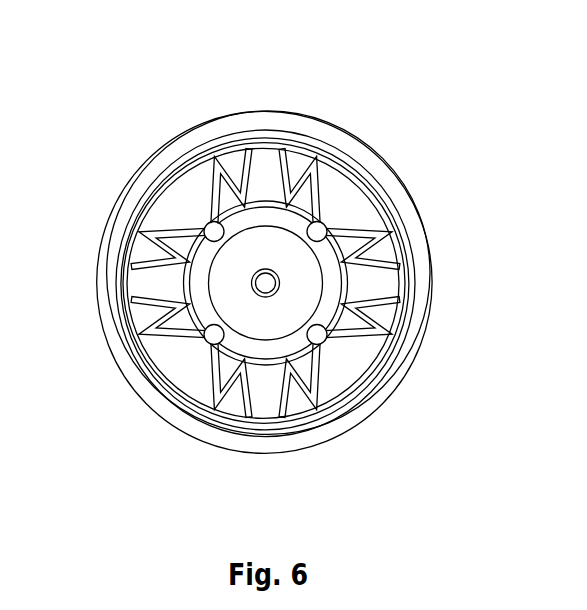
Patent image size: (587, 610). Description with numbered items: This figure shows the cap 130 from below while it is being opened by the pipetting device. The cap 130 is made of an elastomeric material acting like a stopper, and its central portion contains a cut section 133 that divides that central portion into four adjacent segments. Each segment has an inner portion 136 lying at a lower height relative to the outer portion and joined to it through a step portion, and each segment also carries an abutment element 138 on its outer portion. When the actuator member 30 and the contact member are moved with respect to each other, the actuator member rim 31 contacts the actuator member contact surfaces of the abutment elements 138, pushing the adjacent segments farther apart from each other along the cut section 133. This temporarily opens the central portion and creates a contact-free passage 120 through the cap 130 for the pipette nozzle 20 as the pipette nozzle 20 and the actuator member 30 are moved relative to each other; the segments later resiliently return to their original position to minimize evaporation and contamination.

The cap 130 is at (212, 118).
The contact-free passage 120 is at (283, 367).
The inner portion 136 is at (190, 208).
The abutment element 138 is at (223, 227).
The cut section 133 is at (172, 235).
The pipette nozzle 20 is at (295, 288).
The actuator member 30 is at (266, 370).
The actuator member rim 31 is at (270, 344).